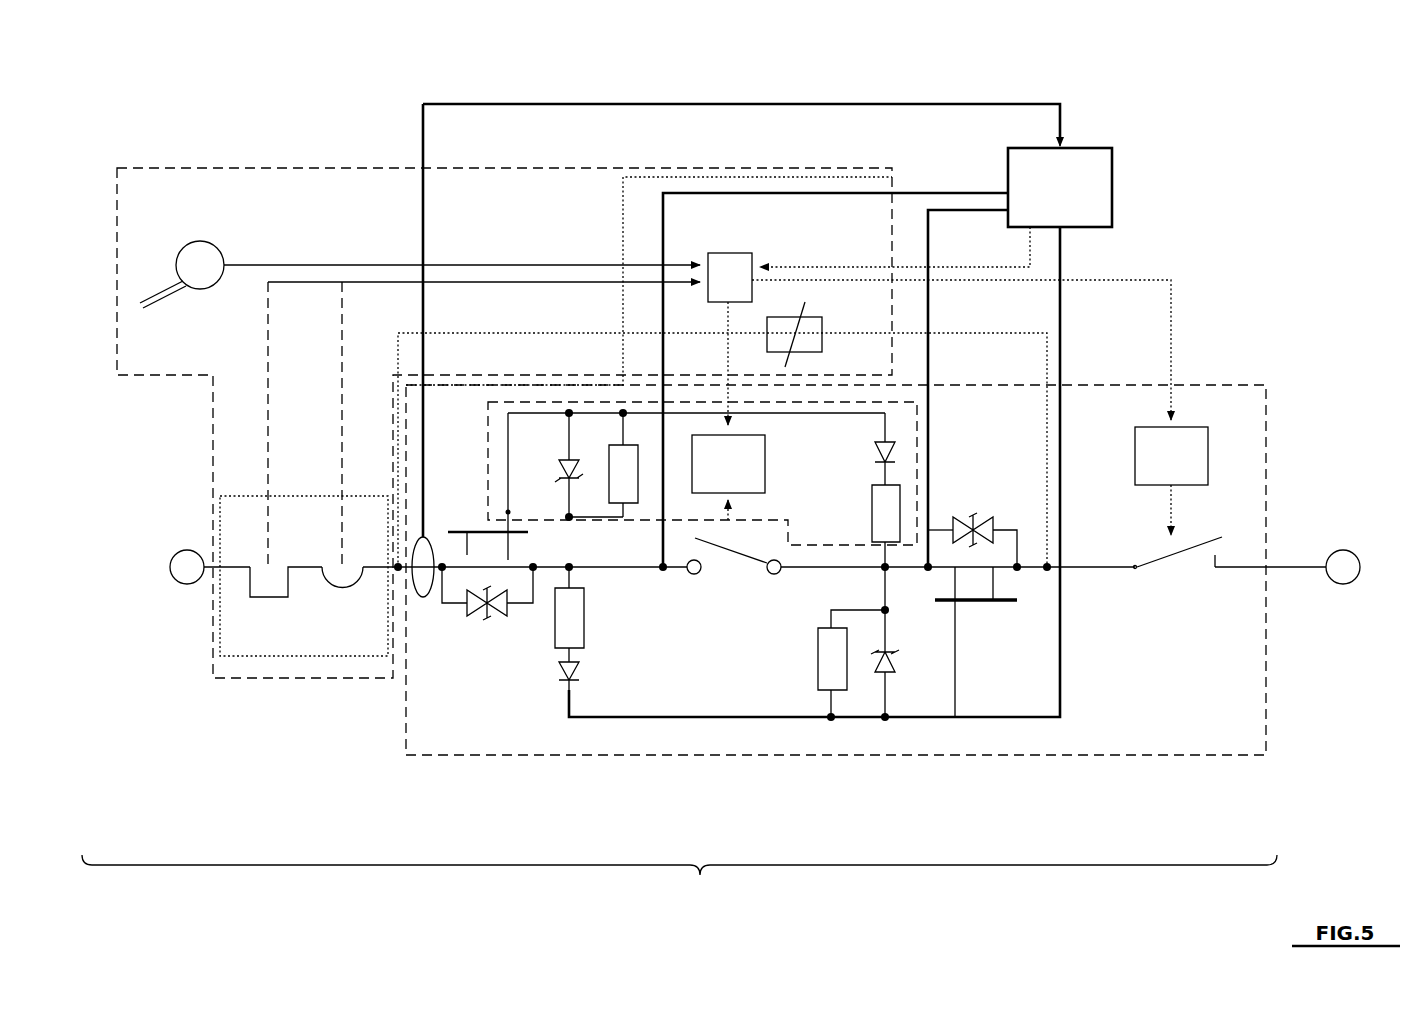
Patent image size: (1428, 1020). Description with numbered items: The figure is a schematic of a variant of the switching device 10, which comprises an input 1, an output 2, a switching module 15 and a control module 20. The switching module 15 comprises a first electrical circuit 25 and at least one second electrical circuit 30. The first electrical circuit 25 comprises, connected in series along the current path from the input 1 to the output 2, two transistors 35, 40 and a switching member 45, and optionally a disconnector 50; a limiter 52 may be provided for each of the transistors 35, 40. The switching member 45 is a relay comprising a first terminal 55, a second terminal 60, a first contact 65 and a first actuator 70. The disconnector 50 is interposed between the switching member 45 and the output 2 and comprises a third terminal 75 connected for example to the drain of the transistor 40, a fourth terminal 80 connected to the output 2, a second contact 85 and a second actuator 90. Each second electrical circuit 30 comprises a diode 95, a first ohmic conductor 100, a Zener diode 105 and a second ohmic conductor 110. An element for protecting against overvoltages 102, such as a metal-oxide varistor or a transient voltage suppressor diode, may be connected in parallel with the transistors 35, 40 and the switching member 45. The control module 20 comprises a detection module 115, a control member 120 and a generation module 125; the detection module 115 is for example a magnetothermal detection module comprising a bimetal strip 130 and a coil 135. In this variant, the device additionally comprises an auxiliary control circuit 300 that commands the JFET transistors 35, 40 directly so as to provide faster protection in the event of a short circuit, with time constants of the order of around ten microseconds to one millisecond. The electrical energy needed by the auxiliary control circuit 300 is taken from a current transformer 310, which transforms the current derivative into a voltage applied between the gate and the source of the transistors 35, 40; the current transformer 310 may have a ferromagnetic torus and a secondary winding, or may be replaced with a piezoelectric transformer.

The switching device 10 is at (1252, 168).
The control module 20 is at (117, 252).
The control member 120 is at (180, 232).
The input 1 is at (171, 582).
The output 2 is at (1343, 582).
The detection module 115 is at (297, 656).
The bimetal strip 130 is at (250, 615).
The coil 135 is at (345, 615).
The current transformer 310 is at (416, 542).
The switching module 15 is at (1266, 452).
The transistor 35 is at (478, 548).
The limiter 52 is at (500, 632).
The Zener diode 105 is at (556, 448).
The second ohmic conductor 110 is at (614, 438).
The first actuator 70 is at (728, 411).
The generation module 125 is at (752, 253).
The element for protecting against overvoltages 102 is at (830, 315).
The switching member 45 is at (730, 689).
The first terminal 55 is at (690, 590).
The second terminal 60 is at (777, 590).
The first contact 65 is at (732, 572).
The second electrical circuit 30 is at (918, 458).
The diode 95 is at (895, 435).
The first ohmic conductor 100 is at (910, 513).
The transistor 40 is at (978, 618).
The second actuator 90 is at (1171, 481).
The disconnector 50 is at (1180, 694).
The third terminal 75 is at (1132, 584).
The second contact 85 is at (1186, 575).
The fourth terminal 80 is at (1222, 580).
The auxiliary control circuit 300 is at (1112, 140).
The first electrical circuit 25 is at (679, 882).